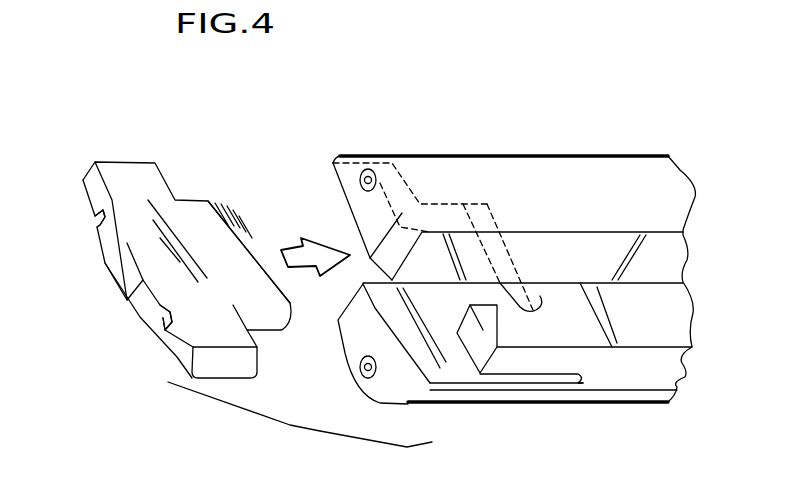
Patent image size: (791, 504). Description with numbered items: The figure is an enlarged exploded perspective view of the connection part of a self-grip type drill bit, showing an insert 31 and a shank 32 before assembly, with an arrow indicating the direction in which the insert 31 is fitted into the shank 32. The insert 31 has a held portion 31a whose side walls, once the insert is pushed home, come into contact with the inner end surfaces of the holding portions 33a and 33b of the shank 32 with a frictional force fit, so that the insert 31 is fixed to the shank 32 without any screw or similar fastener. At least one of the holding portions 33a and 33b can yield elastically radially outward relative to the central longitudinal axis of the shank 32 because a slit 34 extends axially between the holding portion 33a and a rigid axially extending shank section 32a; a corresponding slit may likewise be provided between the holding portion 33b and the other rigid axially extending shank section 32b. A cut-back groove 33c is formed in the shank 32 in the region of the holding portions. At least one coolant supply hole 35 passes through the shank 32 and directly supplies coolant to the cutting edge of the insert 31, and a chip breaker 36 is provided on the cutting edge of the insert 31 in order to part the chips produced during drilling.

The insert 31 is at (173, 157).
The held portion 31a is at (245, 245).
The shank 32 is at (538, 140).
The rigid axially extending shank section 32a is at (435, 393).
The rigid axially extending shank section 32b is at (422, 172).
The holding portion 33a is at (477, 372).
The holding portion 33b is at (448, 204).
The cut-back groove 33c is at (535, 315).
The slit 34 is at (553, 385).
The coolant supply hole 35 is at (370, 168).
The chip breaker 36 is at (157, 300).